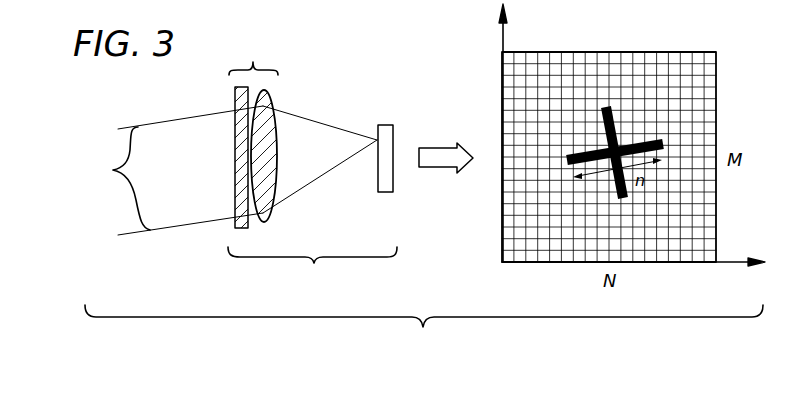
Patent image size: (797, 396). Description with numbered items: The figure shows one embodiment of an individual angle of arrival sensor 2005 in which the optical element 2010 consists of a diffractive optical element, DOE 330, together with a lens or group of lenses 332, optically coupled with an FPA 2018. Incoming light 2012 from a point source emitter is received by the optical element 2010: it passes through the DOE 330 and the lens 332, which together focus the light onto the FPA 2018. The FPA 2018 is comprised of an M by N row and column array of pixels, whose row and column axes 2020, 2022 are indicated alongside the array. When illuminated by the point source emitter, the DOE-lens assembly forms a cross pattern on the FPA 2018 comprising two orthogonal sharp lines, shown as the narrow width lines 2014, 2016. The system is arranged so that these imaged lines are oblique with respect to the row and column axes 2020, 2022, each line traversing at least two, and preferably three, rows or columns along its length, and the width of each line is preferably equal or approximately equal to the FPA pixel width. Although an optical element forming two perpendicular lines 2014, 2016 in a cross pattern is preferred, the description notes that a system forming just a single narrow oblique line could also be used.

The angle of arrival sensor 2005 is at (314, 263).
The optical element 2010 is at (253, 62).
The incoming light 2012 is at (113, 170).
The DOE 330 is at (235, 150).
The lens 332 is at (265, 217).
The FPA 2018 is at (386, 123).
The column axis 2022 is at (502, 35).
The row axis 2020 is at (732, 262).
The narrow width line 2014 is at (606, 107).
The narrow width line 2016 is at (665, 143).